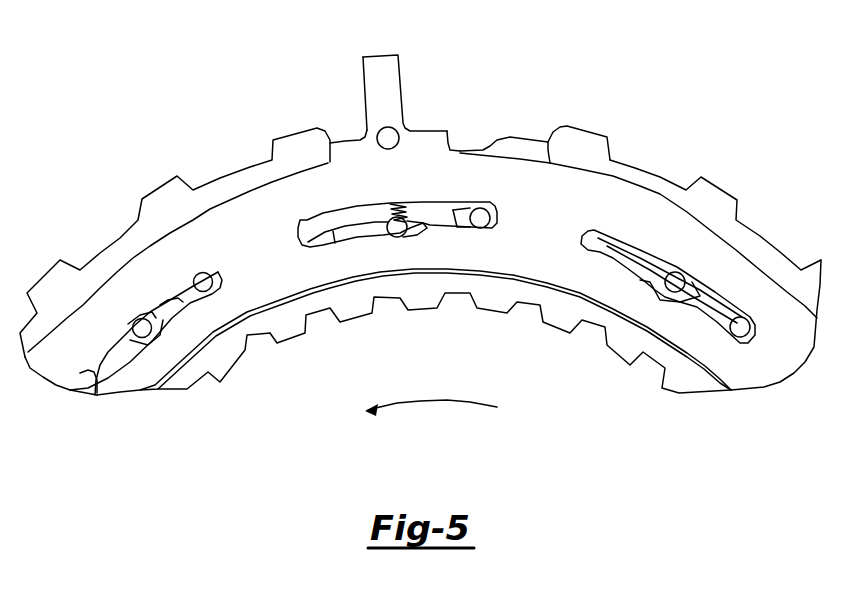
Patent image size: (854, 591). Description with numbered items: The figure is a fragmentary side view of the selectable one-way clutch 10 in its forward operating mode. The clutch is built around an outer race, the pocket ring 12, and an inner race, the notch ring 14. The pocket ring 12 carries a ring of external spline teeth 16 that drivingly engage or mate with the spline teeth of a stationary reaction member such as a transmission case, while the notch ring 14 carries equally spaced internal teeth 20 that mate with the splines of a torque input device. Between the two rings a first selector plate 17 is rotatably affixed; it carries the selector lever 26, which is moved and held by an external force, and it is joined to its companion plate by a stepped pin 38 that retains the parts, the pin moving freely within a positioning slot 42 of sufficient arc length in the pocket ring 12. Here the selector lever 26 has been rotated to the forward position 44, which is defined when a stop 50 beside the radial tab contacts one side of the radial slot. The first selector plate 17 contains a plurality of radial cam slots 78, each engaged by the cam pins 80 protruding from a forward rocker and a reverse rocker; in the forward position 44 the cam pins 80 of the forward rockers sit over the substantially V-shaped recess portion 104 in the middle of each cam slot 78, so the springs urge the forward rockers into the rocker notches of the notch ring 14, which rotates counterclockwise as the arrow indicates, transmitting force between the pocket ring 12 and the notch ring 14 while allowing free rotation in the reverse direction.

The selectable one-way clutch 10 is at (423, 215).
The pocket ring 12 is at (422, 252).
The notch ring 14 is at (414, 346).
The external spline teeth 16 is at (420, 233).
The first selector plate 17 is at (579, 126).
The internal teeth 20 is at (444, 343).
The selector lever 26 is at (405, 72).
The stepped pin 38 is at (418, 160).
The positioning slot 42 is at (504, 122).
The forward position 44 is at (326, 73).
The stop 50 is at (458, 105).
The radial cam slot 78 is at (117, 277).
The cam pins 80 is at (146, 262).
The V-shaped recess portion 104 is at (397, 282).